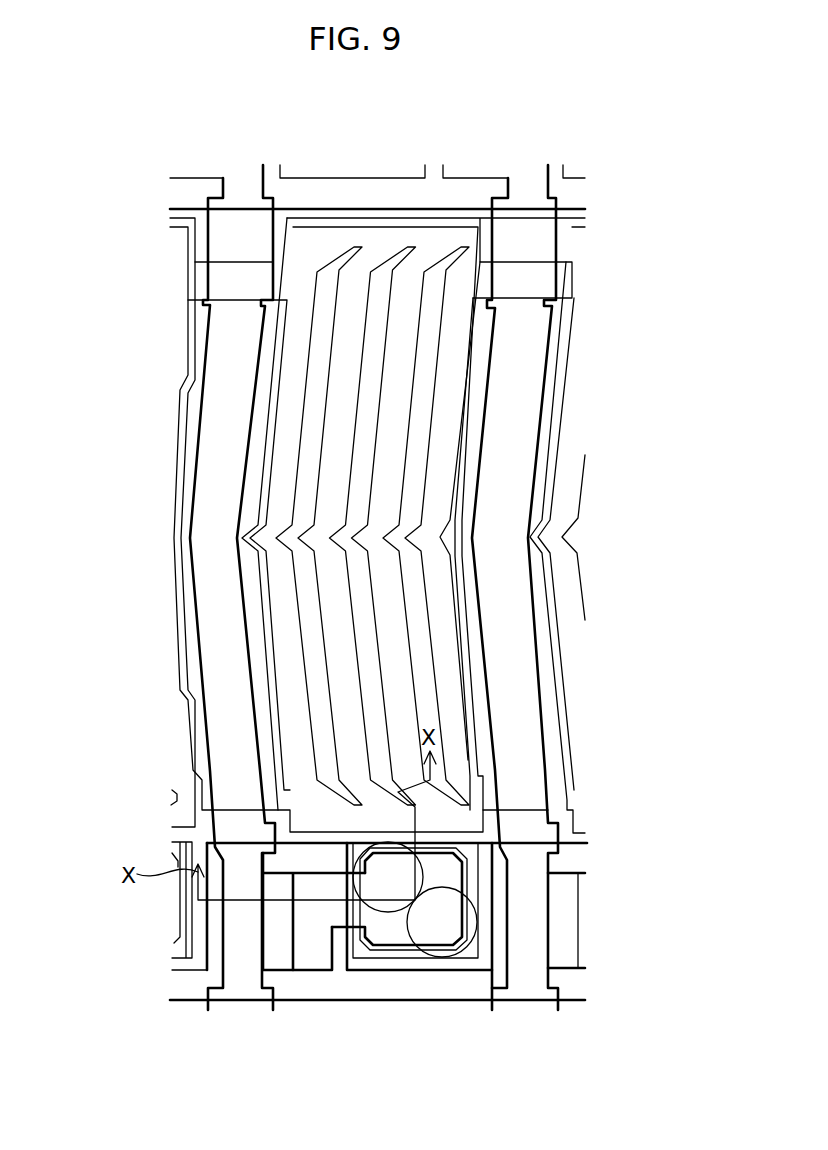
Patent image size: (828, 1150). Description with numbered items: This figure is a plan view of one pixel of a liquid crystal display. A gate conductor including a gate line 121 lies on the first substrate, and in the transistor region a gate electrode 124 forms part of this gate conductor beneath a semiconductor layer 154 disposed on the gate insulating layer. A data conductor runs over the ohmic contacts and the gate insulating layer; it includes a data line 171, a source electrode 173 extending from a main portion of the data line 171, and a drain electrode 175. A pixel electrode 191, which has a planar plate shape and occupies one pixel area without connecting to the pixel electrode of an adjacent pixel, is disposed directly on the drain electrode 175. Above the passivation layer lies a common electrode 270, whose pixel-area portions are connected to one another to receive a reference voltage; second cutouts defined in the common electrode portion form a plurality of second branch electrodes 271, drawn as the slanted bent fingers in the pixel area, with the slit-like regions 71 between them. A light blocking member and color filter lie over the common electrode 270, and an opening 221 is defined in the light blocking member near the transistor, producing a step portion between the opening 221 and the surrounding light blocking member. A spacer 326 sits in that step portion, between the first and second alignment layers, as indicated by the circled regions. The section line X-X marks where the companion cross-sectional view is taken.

The slit / branch opening 71 is at (437, 430).
The gate line 121 is at (455, 972).
The gate electrode 124 is at (207, 918).
The semiconductor layer 154 is at (280, 971).
The data line 171 is at (190, 576).
The source electrode 173 is at (265, 935).
The drain electrode 175 is at (338, 962).
The pixel electrode 191 is at (468, 486).
The opening 221 is at (478, 895).
The common electrode 270 is at (468, 718).
The second branch electrodes 271 is at (464, 526).
The spacer 326 is at (428, 925).